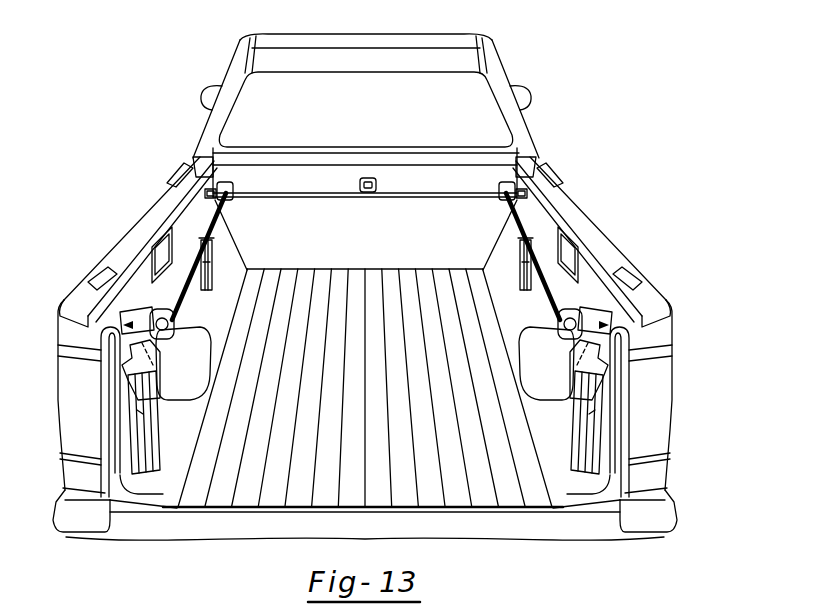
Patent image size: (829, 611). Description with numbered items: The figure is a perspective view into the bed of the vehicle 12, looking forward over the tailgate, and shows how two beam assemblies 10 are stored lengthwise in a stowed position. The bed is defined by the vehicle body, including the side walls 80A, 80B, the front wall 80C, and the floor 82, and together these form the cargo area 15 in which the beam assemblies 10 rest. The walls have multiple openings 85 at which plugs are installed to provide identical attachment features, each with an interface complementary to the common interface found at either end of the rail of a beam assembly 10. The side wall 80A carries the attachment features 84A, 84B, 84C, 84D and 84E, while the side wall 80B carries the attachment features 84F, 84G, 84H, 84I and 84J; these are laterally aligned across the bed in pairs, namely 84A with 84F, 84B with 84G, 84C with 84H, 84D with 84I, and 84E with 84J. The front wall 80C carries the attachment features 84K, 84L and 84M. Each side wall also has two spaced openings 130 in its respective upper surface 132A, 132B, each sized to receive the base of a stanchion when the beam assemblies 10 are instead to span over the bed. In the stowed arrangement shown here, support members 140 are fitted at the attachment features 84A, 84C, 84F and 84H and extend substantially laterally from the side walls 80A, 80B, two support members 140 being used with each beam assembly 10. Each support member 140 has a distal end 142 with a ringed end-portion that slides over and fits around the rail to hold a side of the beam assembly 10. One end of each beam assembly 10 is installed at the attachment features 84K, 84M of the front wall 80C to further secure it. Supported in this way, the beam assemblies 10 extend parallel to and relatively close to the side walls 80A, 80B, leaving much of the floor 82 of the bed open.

The beam assembly 10 is at (226, 210).
The vehicle 12 is at (624, 121).
The cargo bed 15 is at (669, 180).
The side wall 80A is at (160, 210).
The side wall 80B is at (572, 210).
The front wall 80C is at (398, 168).
The floor 82 is at (400, 493).
The attachment feature 84A is at (158, 378).
The attachment feature 84B is at (178, 311).
The attachment feature 84C is at (236, 203).
The attachment feature 84D is at (145, 415).
The attachment feature 84E is at (210, 268).
The attachment feature 84F is at (574, 378).
The attachment feature 84G is at (554, 311).
The attachment feature 84H is at (496, 203).
The attachment feature 84I is at (587, 415).
The attachment feature 84J is at (522, 268).
The attachment feature 84K is at (229, 174).
The attachment feature 84L is at (357, 185).
The attachment feature 84M is at (503, 174).
The opening 85 is at (213, 264).
The opening 130 is at (180, 176).
The upper surface 132A is at (142, 230).
The upper surface 132B is at (590, 230).
The support member 140 is at (212, 193).
The distal end 142 is at (185, 318).